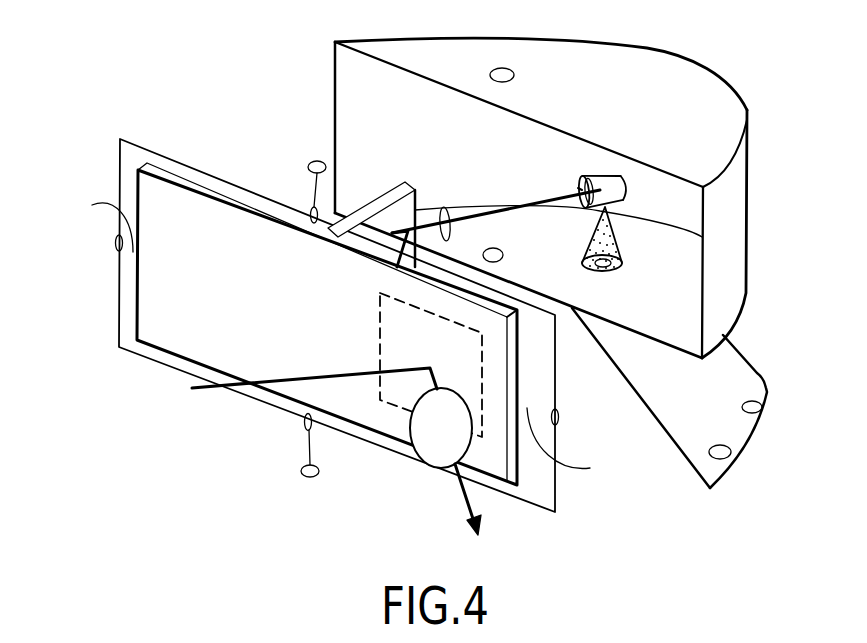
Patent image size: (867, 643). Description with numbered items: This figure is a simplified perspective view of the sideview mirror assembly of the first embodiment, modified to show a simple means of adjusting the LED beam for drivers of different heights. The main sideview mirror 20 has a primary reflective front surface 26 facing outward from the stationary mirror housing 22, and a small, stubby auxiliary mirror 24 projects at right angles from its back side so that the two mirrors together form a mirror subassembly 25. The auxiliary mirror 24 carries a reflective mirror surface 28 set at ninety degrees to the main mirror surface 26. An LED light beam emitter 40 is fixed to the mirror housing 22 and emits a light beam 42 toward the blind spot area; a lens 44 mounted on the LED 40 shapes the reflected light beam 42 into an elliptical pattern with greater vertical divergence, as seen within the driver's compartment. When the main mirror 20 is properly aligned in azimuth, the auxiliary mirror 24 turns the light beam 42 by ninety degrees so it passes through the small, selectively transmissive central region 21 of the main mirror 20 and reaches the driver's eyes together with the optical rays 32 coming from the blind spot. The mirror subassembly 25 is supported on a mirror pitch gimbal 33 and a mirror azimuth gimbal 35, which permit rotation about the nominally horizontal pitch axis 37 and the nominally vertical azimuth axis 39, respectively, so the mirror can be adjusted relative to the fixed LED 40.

The main sideview mirror 20 is at (513, 366).
The selectively transmissive region 21 is at (386, 318).
The mirror housing 22 is at (663, 117).
The auxiliary mirror 24 is at (414, 188).
The mirror subassembly 25 is at (228, 128).
The primary reflective front surface 26 is at (197, 271).
The reflective mirror surface 28 is at (392, 212).
The optical rays 32 is at (196, 388).
The mirror pitch gimbal 33 is at (115, 243).
The mirror azimuth gimbal 35 is at (317, 160).
The pitch mirror axis 37 is at (341, 338).
The azimuth mirror axis 39 is at (311, 190).
The LED light beam emitter 40 is at (613, 186).
The light beam 42 is at (487, 215).
The lens 44 is at (578, 188).